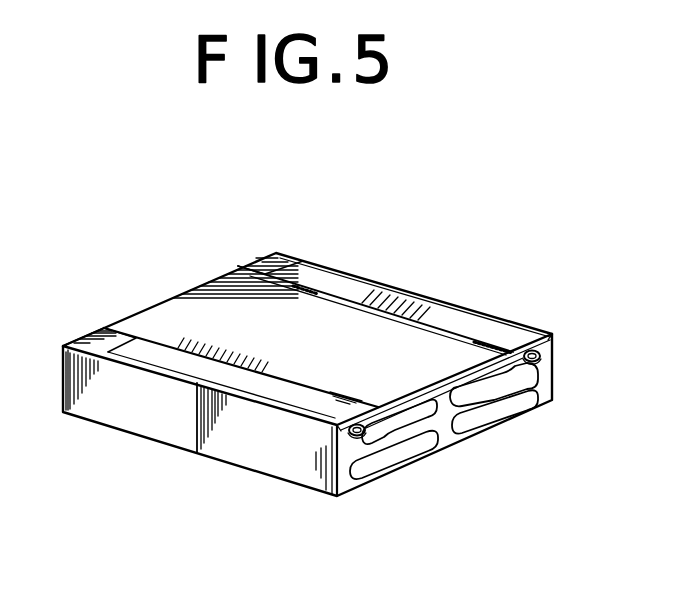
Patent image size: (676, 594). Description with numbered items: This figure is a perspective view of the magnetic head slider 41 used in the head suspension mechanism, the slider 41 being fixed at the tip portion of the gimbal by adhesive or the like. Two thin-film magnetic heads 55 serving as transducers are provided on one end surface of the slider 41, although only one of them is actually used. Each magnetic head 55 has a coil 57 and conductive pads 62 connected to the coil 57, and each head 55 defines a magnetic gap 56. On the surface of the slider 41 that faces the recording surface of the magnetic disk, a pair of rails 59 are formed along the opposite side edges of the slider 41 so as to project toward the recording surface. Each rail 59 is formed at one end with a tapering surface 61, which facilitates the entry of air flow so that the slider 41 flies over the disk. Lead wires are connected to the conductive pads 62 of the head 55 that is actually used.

The magnetic head slider 41 is at (165, 279).
The thin-film magnetic head 55 is at (552, 335).
The magnetic gap 56 is at (357, 424).
The coil 57 is at (538, 359).
The rail 59 is at (385, 288).
The tapering surface 61 is at (95, 340).
The conductive pad 62 is at (478, 421).